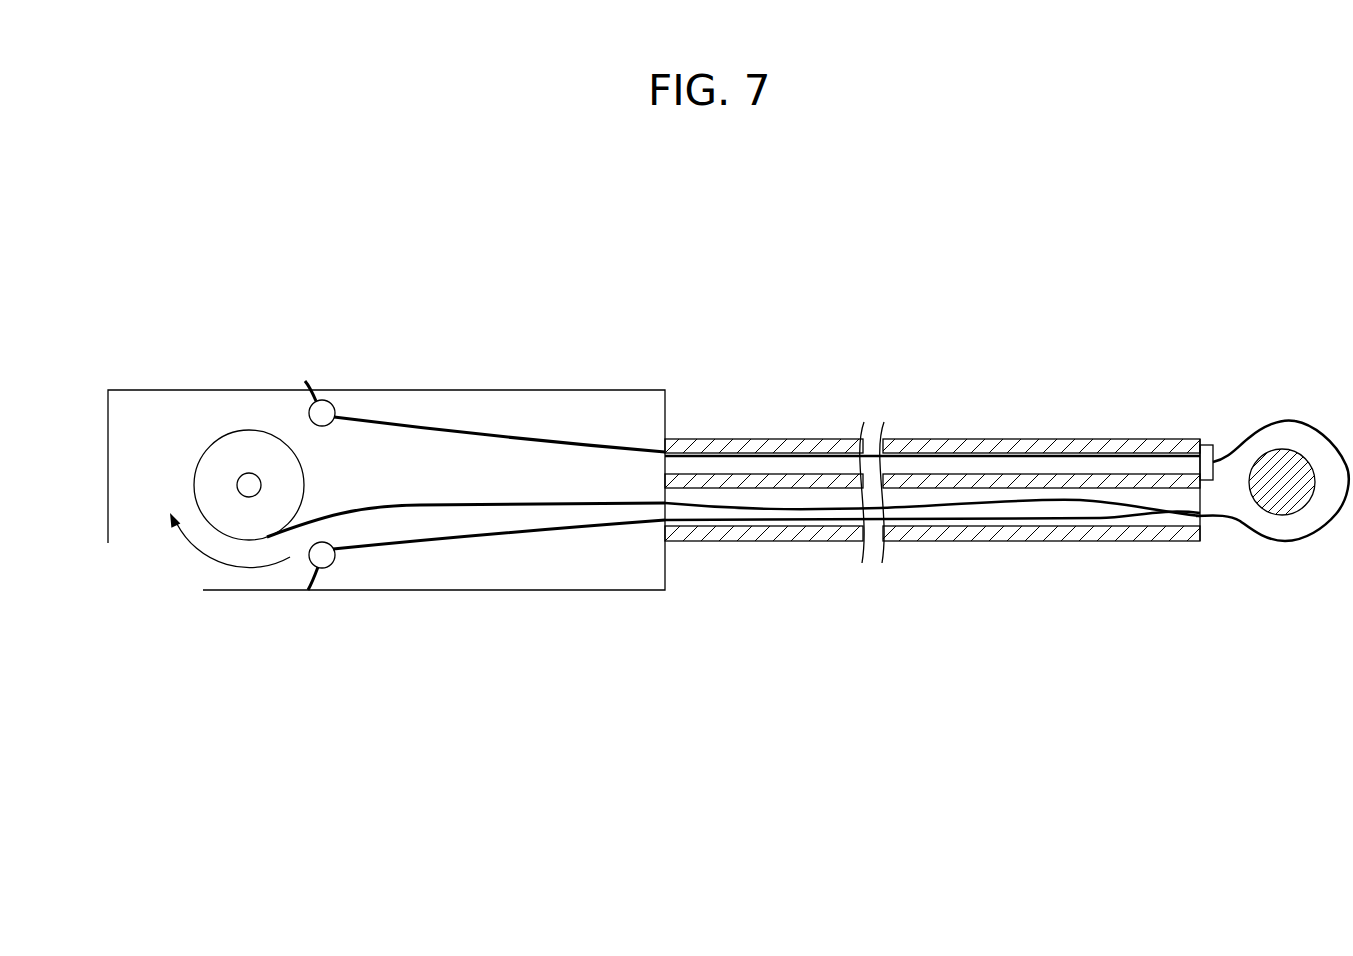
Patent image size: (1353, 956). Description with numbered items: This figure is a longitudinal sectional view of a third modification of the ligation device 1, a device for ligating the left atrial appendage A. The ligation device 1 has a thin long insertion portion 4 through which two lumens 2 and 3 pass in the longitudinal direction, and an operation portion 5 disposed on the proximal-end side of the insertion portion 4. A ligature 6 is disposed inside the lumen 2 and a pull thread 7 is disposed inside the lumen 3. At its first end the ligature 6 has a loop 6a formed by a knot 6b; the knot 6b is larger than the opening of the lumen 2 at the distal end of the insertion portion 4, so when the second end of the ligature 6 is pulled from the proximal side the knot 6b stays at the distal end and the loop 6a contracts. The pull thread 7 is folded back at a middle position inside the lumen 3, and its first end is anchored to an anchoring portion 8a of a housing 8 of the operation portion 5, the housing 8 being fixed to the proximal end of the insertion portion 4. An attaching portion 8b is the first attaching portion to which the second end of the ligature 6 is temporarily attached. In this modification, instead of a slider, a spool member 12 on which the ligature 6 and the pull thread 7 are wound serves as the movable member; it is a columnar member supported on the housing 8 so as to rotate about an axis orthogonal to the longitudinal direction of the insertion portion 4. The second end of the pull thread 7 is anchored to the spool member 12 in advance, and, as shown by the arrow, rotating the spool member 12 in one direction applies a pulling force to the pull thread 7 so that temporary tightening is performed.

The ligation device 1 is at (864, 248).
The lumen 2 is at (979, 461).
The lumen 3 is at (1093, 516).
The insertion portion 4 is at (1045, 393).
The operation portion 5 is at (452, 362).
The ligature 6 is at (913, 452).
The loop 6a is at (1310, 541).
The knot 6b is at (1210, 445).
The pull thread 7 is at (781, 511).
The housing 8 is at (475, 592).
The anchoring portion 8a is at (335, 560).
The attaching portion 8b is at (330, 400).
The spool member 12 is at (206, 457).
The left atrial appendage A is at (1283, 448).